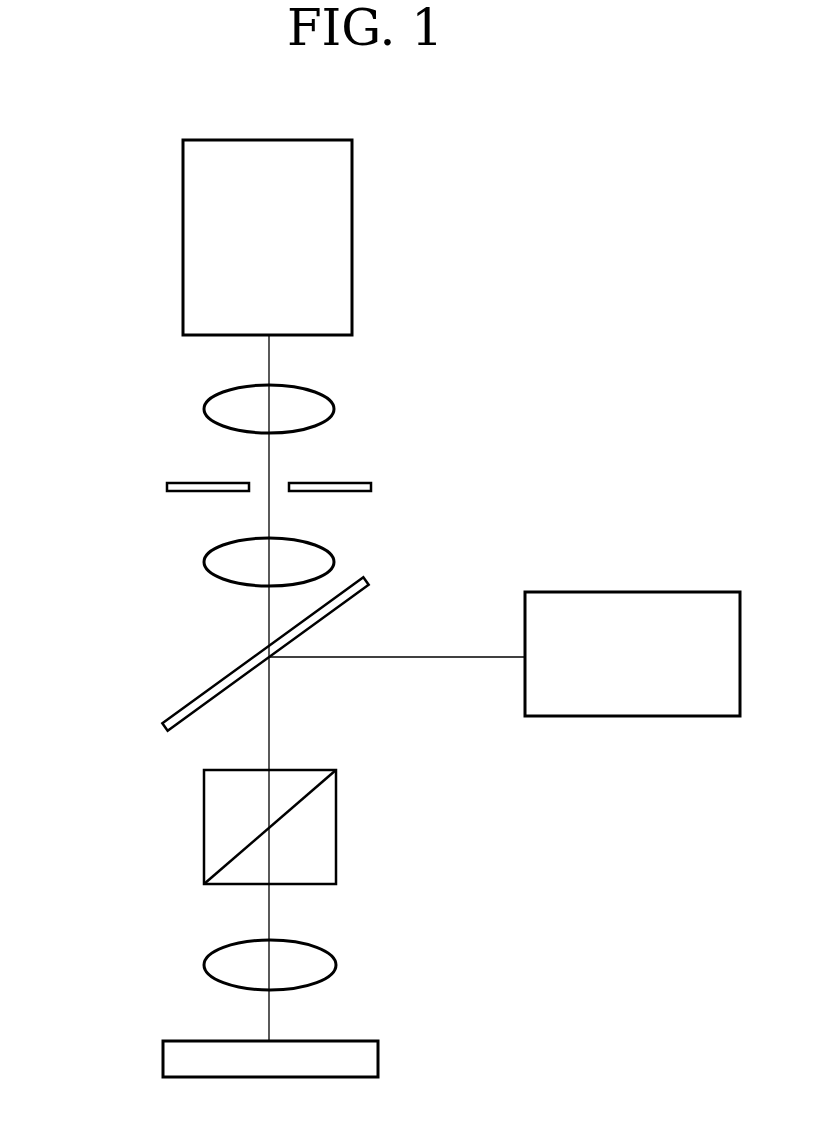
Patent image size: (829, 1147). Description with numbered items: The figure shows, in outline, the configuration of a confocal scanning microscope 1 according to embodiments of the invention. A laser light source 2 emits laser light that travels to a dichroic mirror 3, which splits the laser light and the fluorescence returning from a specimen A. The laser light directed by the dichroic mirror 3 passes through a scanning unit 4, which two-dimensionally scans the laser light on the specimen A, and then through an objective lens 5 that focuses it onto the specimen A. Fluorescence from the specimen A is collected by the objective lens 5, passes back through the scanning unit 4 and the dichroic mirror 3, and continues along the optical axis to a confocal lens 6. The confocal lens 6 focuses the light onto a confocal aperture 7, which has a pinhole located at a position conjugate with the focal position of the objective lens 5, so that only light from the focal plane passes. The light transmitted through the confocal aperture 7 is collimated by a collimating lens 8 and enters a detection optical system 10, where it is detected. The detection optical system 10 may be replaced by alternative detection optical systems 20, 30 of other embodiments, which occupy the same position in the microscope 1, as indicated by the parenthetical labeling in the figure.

The microscope 1 is at (543, 360).
The laser light source 2 is at (634, 592).
The dichroic mirror 3 is at (193, 698).
The scanning unit 4 is at (204, 826).
The objective lens 5 is at (204, 964).
The confocal lens 6 is at (204, 562).
The confocal aperture 7 is at (167, 486).
The collimating lens 8 is at (204, 409).
The detection optical system 10 is at (191, 237).
The detection optical system 20 is at (267, 237).
The detection optical system 30 is at (183, 236).
The specimen A is at (163, 1059).